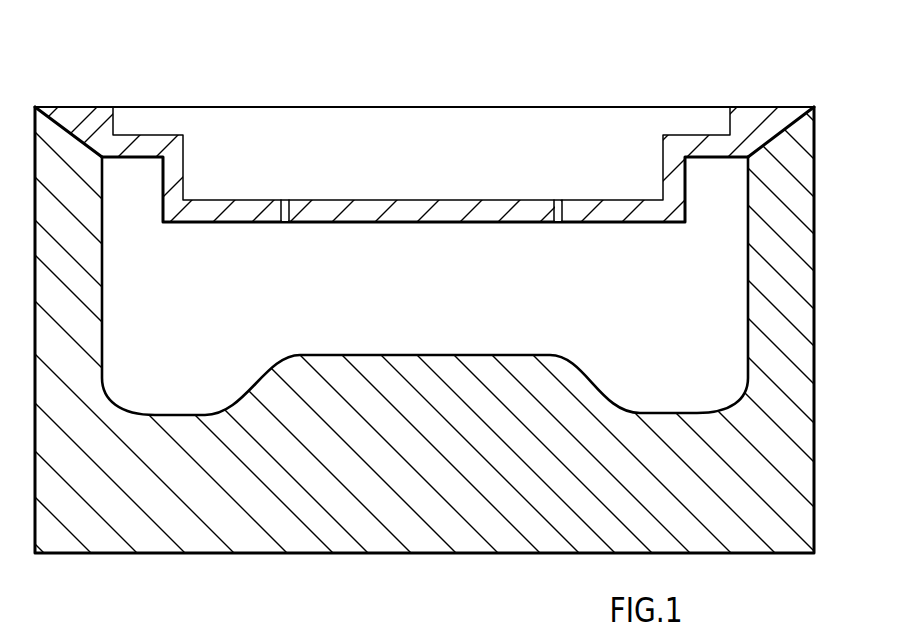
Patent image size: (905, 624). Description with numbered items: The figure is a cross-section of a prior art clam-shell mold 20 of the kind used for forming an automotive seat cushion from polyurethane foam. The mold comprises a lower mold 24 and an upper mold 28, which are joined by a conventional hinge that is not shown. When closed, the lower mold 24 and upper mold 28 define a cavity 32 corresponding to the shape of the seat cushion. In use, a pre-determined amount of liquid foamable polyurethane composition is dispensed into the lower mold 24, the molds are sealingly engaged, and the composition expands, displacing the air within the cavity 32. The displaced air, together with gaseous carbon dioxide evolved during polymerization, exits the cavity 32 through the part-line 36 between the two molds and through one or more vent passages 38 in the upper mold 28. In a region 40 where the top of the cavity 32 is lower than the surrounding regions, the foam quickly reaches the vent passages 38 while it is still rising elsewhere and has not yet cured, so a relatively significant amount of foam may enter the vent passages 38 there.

The clam-shell mold 20 is at (434, 84).
The lower mold 24 is at (815, 497).
The upper mold 28 is at (624, 107).
The cavity 32 is at (424, 324).
The part-line 36 is at (776, 126).
The vent passages 38 is at (285, 198).
The region where the top of the cavity is lower than surrounding regions 40 is at (686, 226).